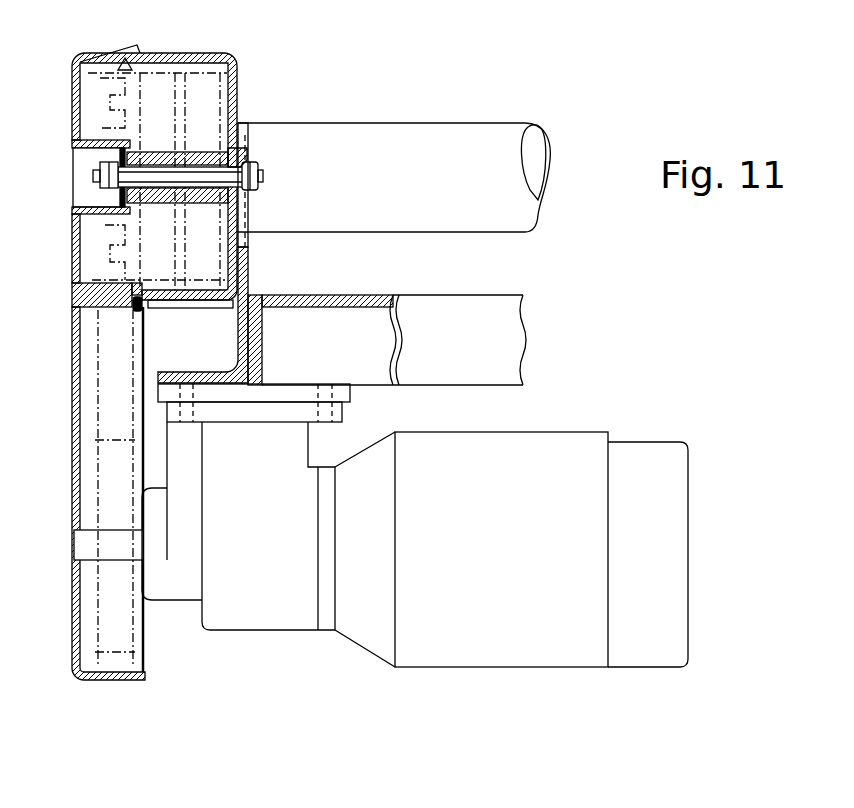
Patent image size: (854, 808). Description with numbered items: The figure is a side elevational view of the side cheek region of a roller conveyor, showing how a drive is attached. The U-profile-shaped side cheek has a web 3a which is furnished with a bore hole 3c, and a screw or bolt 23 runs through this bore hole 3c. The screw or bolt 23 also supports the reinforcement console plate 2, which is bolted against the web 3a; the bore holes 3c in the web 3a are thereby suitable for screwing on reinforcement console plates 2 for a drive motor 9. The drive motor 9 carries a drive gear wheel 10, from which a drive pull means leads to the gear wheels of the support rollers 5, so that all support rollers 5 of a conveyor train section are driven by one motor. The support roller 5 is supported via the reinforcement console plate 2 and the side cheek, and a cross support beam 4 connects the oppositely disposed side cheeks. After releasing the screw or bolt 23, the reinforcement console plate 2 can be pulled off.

The web 3a is at (235, 72).
The bore hole 3c is at (230, 155).
The screw or bolt 23 is at (245, 167).
The support roller 5 is at (497, 157).
The reinforcement console plate 2 is at (243, 268).
The cross support beam 4 is at (498, 330).
The drive gear wheel 10 is at (118, 622).
The drive motor 9 is at (370, 632).